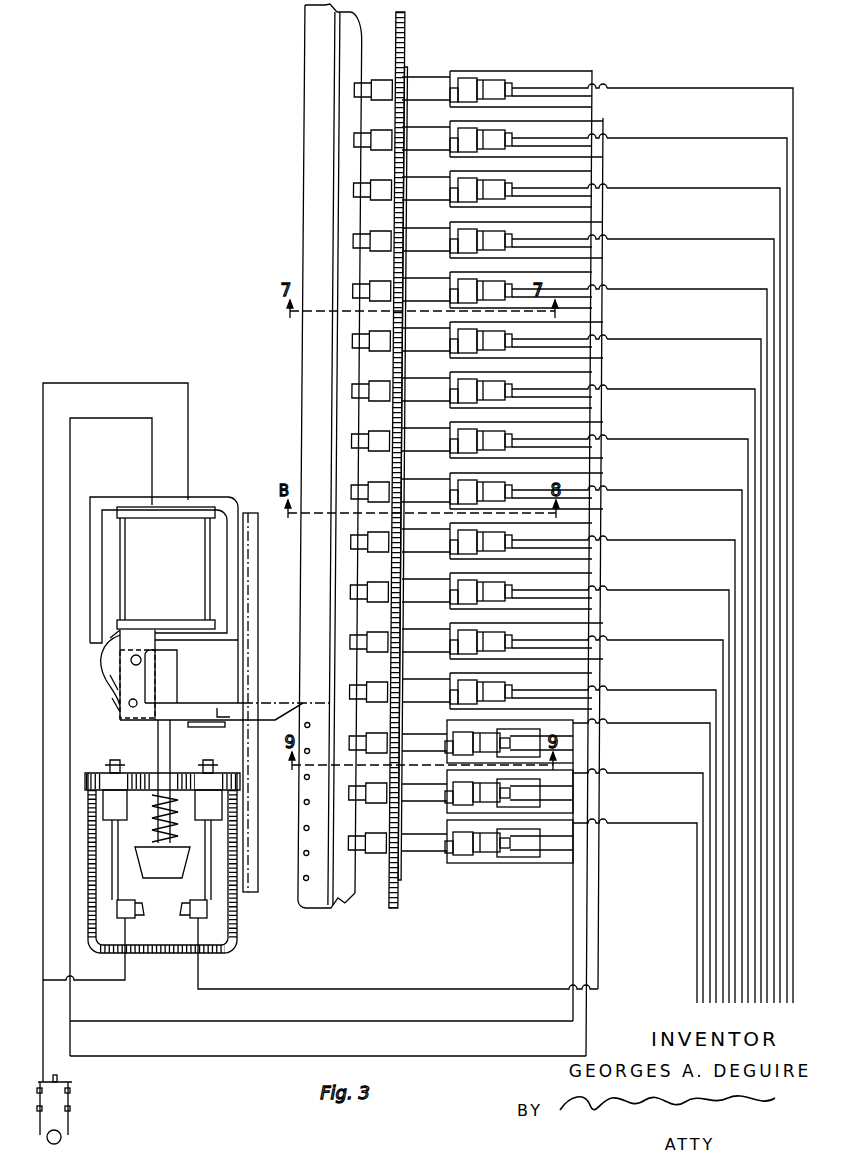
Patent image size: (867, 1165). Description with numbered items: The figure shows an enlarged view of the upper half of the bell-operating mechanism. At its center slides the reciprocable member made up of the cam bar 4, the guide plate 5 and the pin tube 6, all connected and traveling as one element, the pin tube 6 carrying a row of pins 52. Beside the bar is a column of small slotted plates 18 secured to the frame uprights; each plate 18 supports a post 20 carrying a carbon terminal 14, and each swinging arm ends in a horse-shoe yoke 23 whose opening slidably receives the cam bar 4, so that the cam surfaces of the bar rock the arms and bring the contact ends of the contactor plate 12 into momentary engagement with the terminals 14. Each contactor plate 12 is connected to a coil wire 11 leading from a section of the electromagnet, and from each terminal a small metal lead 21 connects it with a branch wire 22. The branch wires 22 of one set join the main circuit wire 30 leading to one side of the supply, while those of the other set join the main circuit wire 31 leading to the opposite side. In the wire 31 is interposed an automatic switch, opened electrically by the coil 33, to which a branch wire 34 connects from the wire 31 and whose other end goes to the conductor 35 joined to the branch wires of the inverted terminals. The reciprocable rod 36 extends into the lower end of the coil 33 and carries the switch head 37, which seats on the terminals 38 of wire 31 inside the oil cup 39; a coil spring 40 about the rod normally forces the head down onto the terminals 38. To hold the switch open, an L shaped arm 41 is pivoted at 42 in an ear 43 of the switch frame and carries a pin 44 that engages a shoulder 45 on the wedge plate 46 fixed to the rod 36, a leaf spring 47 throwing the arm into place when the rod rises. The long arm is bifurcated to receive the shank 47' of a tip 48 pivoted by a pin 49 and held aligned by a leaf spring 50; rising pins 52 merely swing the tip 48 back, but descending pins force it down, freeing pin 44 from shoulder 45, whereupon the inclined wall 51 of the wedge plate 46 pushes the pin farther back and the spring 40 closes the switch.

The cam bar 4 is at (362, 44).
The guide plate 5 is at (335, 191).
The pin tube 6 is at (305, 131).
The coil wire 11 is at (691, 188).
The contactor plate 12 is at (512, 85).
The carbon terminals 14 is at (488, 82).
The slotted plate 18 is at (407, 63).
The posts 20 is at (433, 77).
The metal lead 21 is at (464, 80).
The branch wire 22 is at (561, 136).
The horse-shoe yoke 23 is at (355, 91).
The main circuit wire 30 is at (300, 1057).
The main circuit wire 31 is at (112, 983).
The coil 33 is at (181, 534).
The branch wire 34 is at (80, 383).
The conductor 35 is at (290, 1019).
The reciprocable rod 36 is at (158, 744).
The switch head 37 is at (171, 880).
The terminals 38 is at (192, 920).
The oil cup 39 is at (237, 932).
The coil spring 40 is at (152, 829).
The L shaped arm 41 is at (186, 703).
The pivot 42 is at (113, 676).
The ear 43 is at (120, 690).
The pin 44 is at (131, 708).
The shoulder 45 is at (118, 711).
The wedge plate 46 is at (152, 684).
The leaf spring 47 is at (96, 675).
The shank 47' is at (285, 695).
The tip 48 is at (303, 703).
The pin 49 is at (228, 719).
The leaf spring 50 is at (210, 728).
The inclined wall 51 is at (103, 652).
The pins 52 is at (309, 830).